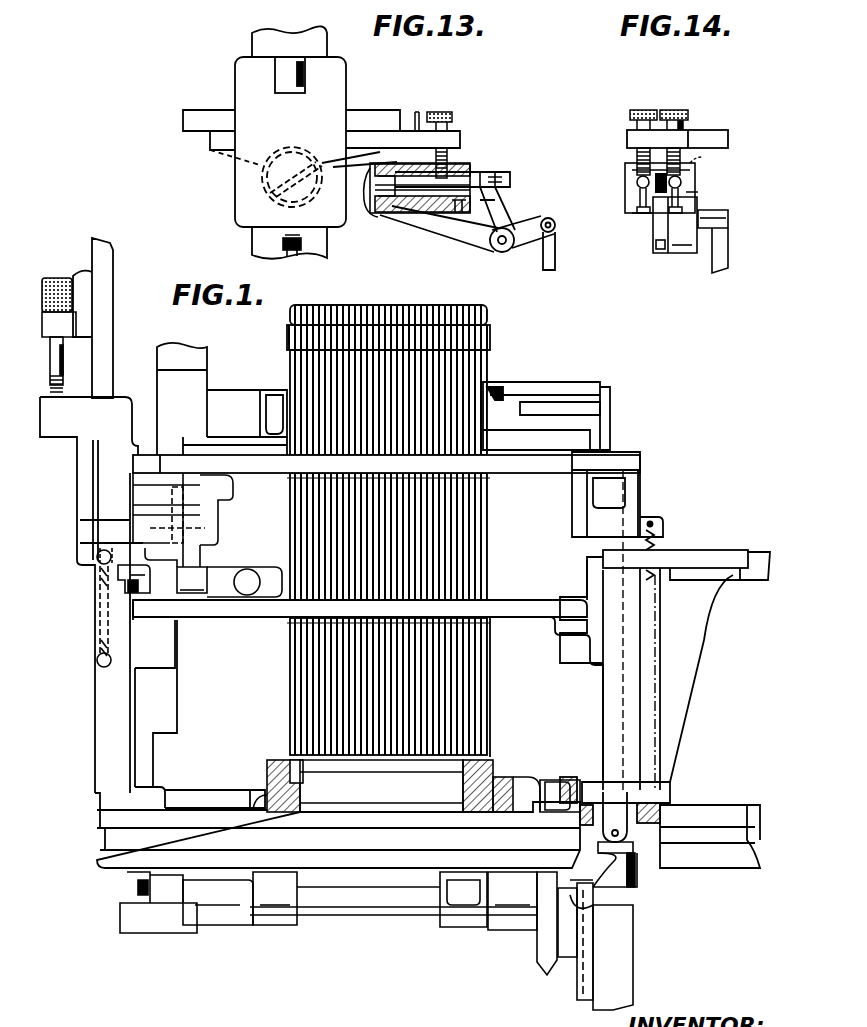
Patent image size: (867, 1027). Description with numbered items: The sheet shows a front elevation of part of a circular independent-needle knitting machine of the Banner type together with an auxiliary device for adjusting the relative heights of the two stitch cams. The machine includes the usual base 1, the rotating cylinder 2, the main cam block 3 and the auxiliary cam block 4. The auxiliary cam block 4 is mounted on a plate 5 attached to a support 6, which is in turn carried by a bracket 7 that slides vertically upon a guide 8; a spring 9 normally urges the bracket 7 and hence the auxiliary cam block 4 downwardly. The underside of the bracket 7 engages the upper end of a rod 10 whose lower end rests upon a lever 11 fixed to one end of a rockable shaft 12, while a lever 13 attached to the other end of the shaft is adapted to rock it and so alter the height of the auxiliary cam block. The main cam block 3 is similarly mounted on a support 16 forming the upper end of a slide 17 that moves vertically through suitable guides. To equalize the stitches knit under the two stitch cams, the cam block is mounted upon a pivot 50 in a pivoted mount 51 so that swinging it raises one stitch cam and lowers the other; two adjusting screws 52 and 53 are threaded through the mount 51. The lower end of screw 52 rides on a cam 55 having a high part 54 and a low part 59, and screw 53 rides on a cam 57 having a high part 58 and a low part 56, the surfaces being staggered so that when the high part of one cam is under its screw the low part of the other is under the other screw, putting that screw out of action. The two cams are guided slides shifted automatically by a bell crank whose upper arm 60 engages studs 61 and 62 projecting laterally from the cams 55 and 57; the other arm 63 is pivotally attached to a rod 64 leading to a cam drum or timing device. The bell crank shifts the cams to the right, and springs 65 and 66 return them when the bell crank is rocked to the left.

In FIG. 1, the base 1 is at (338, 835).
In FIG. 1, the rotating cylinder 2 is at (290, 680).
In FIG. 1, the main cam block 3 is at (548, 393).
In FIG. 1, the auxiliary cam block 4 is at (220, 413).
In FIG. 13, the plate 5 is at (386, 113).
In FIG. 1, the plate 5 is at (386, 464).
In FIG. 1, the support 6 is at (213, 530).
In FIG. 1, the bracket 7 is at (114, 418).
In FIG. 1, the guide 8 is at (110, 350).
In FIG. 1, the spring 9 is at (100, 582).
In FIG. 13, the rod 10 is at (283, 246).
In FIG. 1, the rod 10 is at (138, 592).
In FIG. 1, the lever 11 is at (160, 923).
In FIG. 1, the rockable shaft 12 is at (328, 910).
In FIG. 1, the lever 13 is at (545, 948).
In FIG. 1, the support 16 is at (622, 460).
In FIG. 1, the slide 17 is at (605, 548).
In FIG. 13, the pivot 50 is at (268, 177).
In FIG. 1, the pivot 50 is at (205, 524).
In FIG. 13, the pivoted mount 51 is at (456, 137).
In FIG. 1, the pivoted mount 51 is at (228, 490).
In FIG. 14, the adjusting screw 52 is at (682, 110).
In FIG. 13, the adjusting screw 53 is at (440, 112).
In FIG. 14, the adjusting screw 53 is at (650, 101).
In FIG. 14, the high part 54 is at (700, 160).
In FIG. 14, the cam 55 is at (682, 182).
In FIG. 13, the low part 56 is at (478, 170).
In FIG. 13, the cam 57 is at (512, 180).
In FIG. 14, the cam 57 is at (637, 182).
In FIG. 13, the high part 58 is at (500, 174).
In FIG. 14, the high part 58 is at (632, 172).
In FIG. 13, the low part 59 is at (385, 216).
In FIG. 13, the upper arm 60 is at (503, 218).
In FIG. 14, the upper arm 60 is at (657, 236).
In FIG. 14, the stud 61 is at (640, 196).
In FIG. 14, the stud 62 is at (682, 192).
In FIG. 13, the arm 63 is at (510, 250).
In FIG. 14, the arm 63 is at (708, 225).
In FIG. 13, the rod 64 is at (556, 260).
In FIG. 14, the rod 64 is at (730, 258).
In FIG. 13, the spring 65 is at (457, 213).
In FIG. 14, the spring 65 is at (637, 212).
In FIG. 14, the spring 66 is at (698, 198).